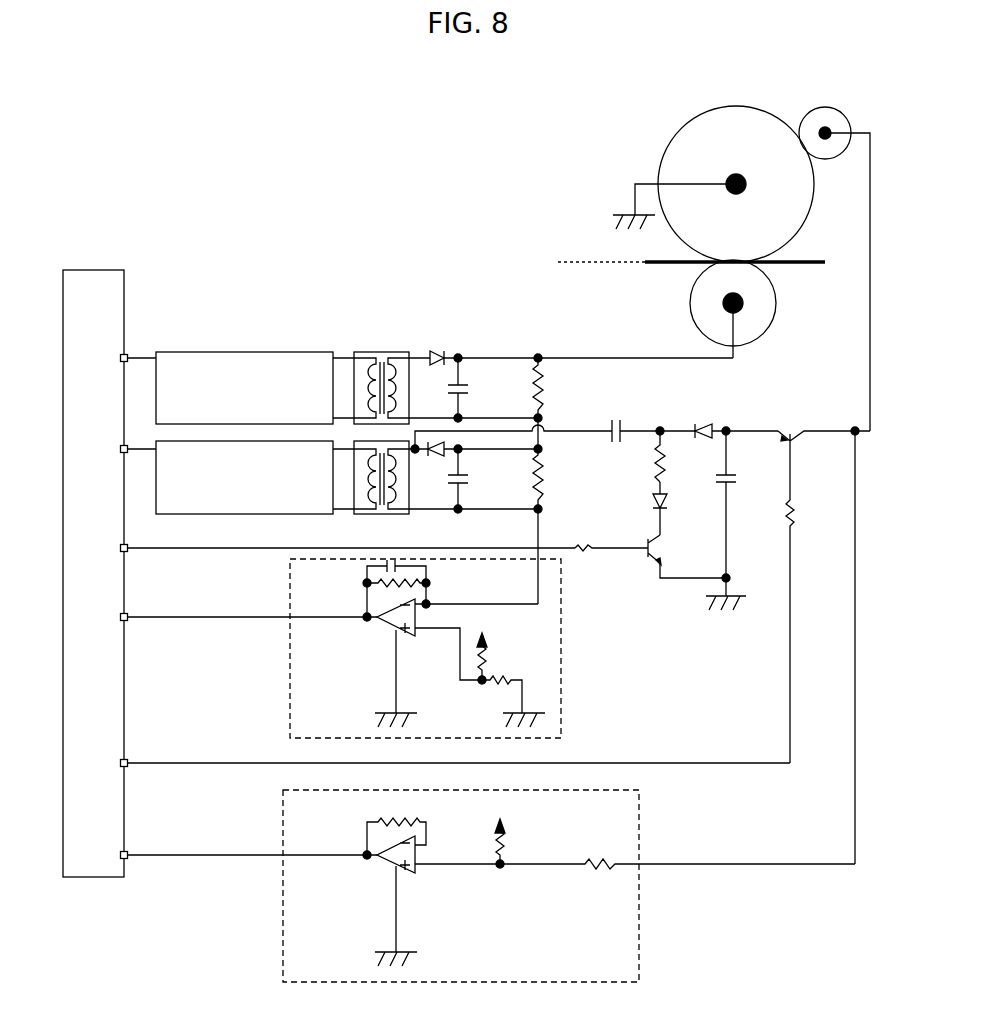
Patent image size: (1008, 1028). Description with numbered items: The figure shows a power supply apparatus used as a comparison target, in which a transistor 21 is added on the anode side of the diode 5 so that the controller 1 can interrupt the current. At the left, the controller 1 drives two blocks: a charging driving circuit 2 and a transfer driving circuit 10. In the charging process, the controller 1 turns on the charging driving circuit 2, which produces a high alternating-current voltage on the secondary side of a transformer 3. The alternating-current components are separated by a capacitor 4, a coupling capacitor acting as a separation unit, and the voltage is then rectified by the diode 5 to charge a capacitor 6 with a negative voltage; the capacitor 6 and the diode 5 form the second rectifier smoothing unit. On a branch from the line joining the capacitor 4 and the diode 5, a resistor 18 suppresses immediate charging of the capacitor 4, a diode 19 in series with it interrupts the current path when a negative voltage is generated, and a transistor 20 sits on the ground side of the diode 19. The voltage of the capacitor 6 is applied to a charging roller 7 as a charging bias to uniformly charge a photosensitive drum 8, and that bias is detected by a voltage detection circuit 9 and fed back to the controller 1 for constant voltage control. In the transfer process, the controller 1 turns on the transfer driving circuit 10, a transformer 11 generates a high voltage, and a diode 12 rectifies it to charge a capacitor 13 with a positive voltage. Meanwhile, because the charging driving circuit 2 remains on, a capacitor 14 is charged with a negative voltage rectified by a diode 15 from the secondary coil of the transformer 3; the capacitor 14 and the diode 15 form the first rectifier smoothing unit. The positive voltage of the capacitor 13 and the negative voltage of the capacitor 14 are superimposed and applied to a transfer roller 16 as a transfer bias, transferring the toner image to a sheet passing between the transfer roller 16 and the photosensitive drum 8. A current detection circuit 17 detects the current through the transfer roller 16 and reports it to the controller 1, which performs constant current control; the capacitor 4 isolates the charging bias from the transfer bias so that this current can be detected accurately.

The controller 1 is at (96, 268).
The charging driving circuit 2 is at (333, 515).
The transformer 3 is at (408, 515).
The capacitor 4 is at (620, 420).
The diode 5 is at (706, 420).
The capacitor 6 is at (738, 480).
The charging roller 7 is at (830, 108).
The photosensitive drum 8 is at (737, 107).
The voltage detection circuit 9 is at (638, 910).
The transfer driving circuit 10 is at (292, 352).
The transformer 11 is at (381, 352).
The diode 12 is at (440, 352).
The capacitor 13 is at (473, 388).
The capacitor 14 is at (473, 478).
The diode 15 is at (438, 460).
The transfer roller 16 is at (768, 332).
The current detection circuit 17 is at (561, 683).
The resistor 18 is at (655, 460).
The diode 19 is at (654, 500).
The transistor 20 is at (648, 556).
The transistor 21 is at (800, 448).